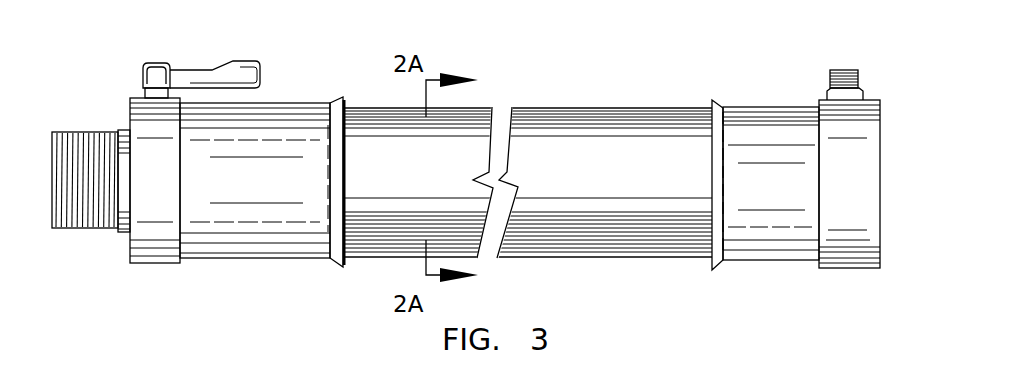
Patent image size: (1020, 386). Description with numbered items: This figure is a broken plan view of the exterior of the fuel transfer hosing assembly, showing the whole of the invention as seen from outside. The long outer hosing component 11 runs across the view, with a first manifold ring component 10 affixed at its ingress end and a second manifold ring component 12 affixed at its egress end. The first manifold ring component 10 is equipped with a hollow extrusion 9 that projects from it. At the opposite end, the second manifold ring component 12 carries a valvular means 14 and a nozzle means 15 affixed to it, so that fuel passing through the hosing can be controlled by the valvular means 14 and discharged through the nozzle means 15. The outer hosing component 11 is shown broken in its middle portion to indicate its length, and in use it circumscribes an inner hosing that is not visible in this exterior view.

The hollow extrusion 9 is at (840, 70).
The first manifold ring component 10 is at (855, 250).
The outer hosing component 11 is at (568, 110).
The second manifold ring component 12 is at (145, 247).
The valvular means 14 is at (215, 67).
The nozzle means 15 is at (87, 140).